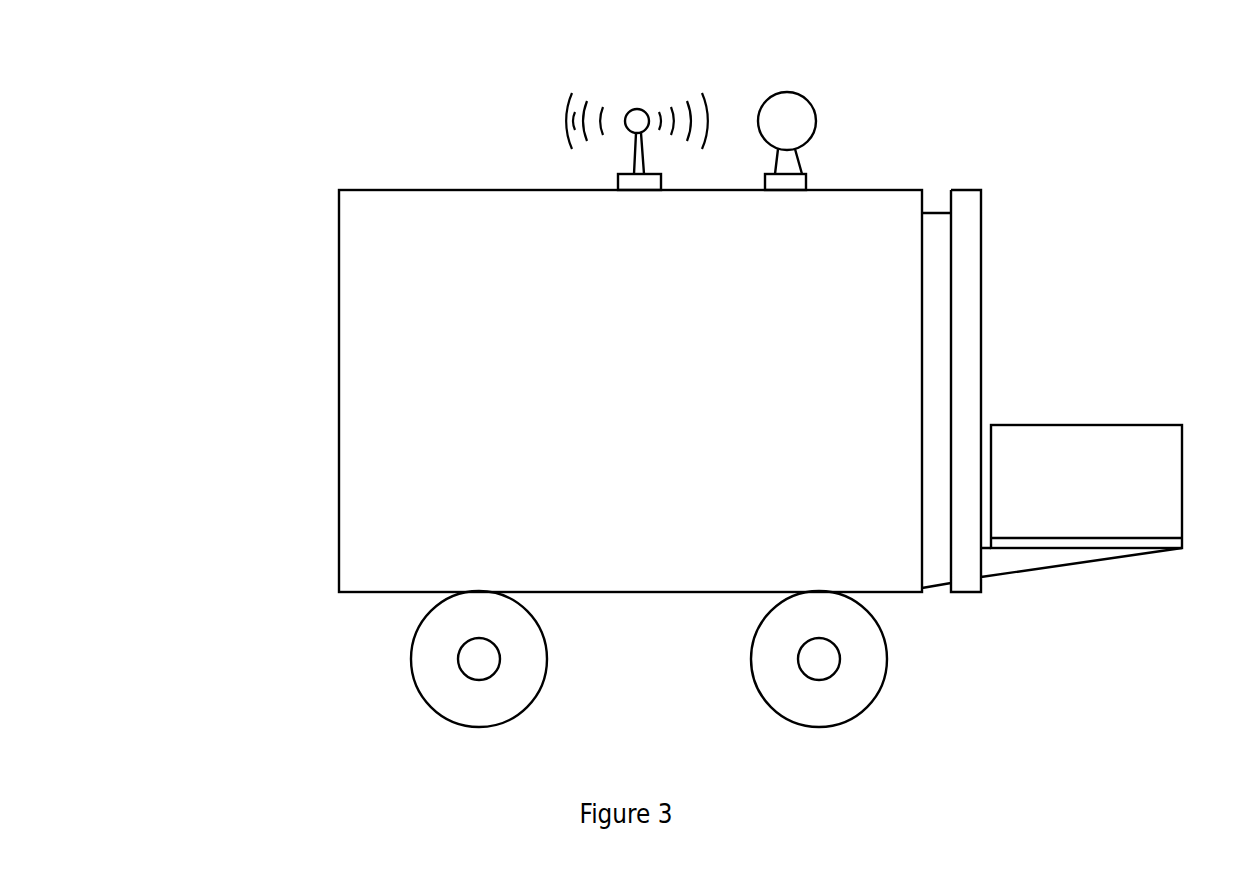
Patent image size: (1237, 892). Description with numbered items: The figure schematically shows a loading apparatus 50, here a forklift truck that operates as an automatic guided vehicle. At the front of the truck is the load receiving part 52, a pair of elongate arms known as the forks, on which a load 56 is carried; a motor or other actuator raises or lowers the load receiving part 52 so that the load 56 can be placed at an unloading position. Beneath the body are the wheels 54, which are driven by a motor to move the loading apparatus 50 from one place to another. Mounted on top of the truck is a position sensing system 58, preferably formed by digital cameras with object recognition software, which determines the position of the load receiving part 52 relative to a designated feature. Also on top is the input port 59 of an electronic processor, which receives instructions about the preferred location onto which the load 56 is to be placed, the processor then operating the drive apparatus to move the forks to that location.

The loading apparatus 50 is at (318, 467).
The load receiving part 52 is at (1073, 559).
The wheels 54 is at (780, 682).
The load 56 is at (1102, 453).
The position sensing system 58 is at (803, 130).
The input port 59 is at (637, 161).